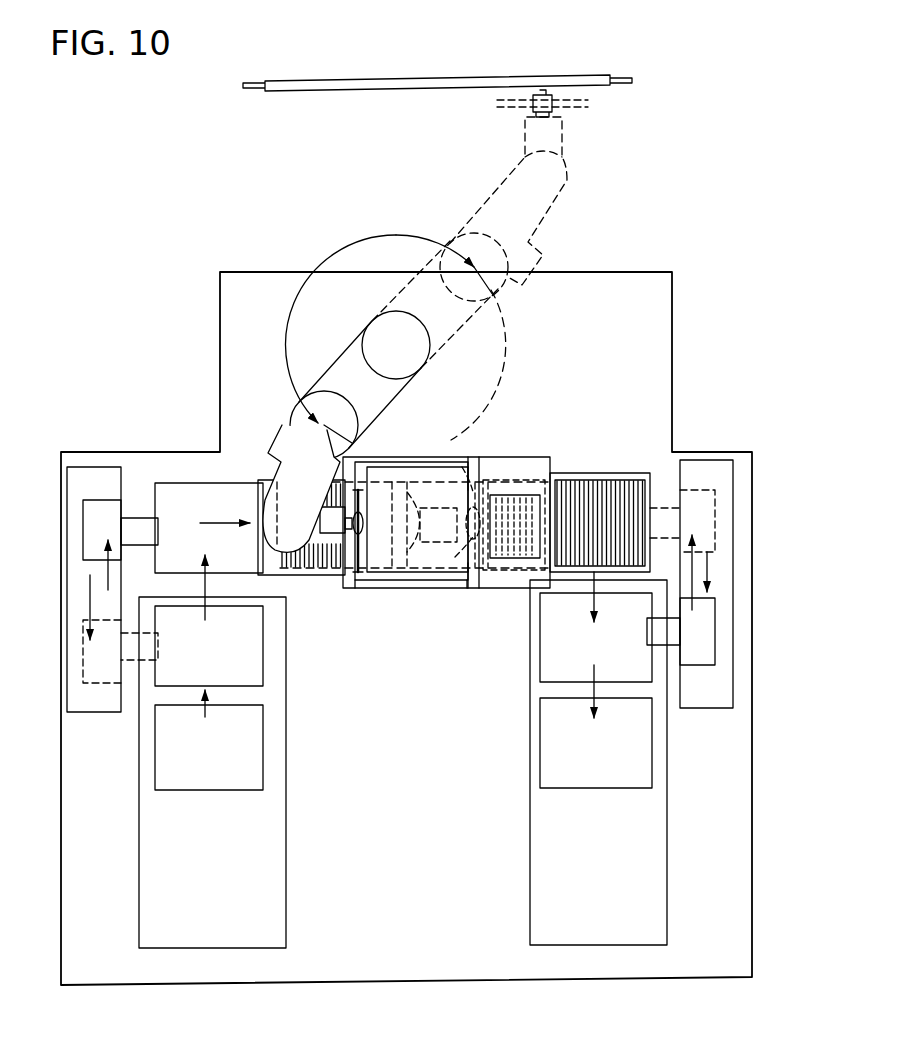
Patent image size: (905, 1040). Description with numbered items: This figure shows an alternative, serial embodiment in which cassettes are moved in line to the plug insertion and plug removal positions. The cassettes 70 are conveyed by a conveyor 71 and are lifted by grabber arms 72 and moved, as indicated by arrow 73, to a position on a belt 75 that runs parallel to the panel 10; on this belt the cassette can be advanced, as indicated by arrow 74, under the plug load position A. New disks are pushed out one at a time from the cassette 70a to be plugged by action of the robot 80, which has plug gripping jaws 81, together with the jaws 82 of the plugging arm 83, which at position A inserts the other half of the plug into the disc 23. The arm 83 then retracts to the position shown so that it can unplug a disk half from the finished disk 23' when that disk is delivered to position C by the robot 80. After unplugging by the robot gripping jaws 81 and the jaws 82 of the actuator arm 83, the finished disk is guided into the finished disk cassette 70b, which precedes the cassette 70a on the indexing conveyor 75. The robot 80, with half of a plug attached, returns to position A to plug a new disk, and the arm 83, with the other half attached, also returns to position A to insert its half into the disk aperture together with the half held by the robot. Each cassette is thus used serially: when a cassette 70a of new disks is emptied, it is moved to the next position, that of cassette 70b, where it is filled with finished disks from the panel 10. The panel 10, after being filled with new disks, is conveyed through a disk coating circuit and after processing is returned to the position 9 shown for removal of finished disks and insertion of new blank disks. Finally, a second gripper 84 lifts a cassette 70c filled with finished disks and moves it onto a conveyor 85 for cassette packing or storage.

The position 9 is at (612, 100).
The panel 10 is at (545, 78).
The robot 80 is at (470, 334).
The arrow 74 is at (212, 518).
The arrow 73 is at (105, 563).
The grabber arms 72 is at (155, 645).
The conveyor 71 is at (262, 840).
The cassettes 70 is at (250, 755).
The conveyor 85 is at (643, 840).
The second gripper 84 is at (715, 523).
The cassette 70c is at (614, 480).
The cassette 70a is at (318, 576).
The belt 75 is at (287, 548).
The finished disk cassette 70b is at (498, 586).
The disc 23 is at (375, 497).
The finished disk 23' is at (489, 497).
The jaws 82 is at (450, 453).
The plugging arm 83 is at (531, 500).
The plug gripping jaws 81 is at (360, 576).
The plug load position A is at (338, 525).
The position C is at (500, 473).